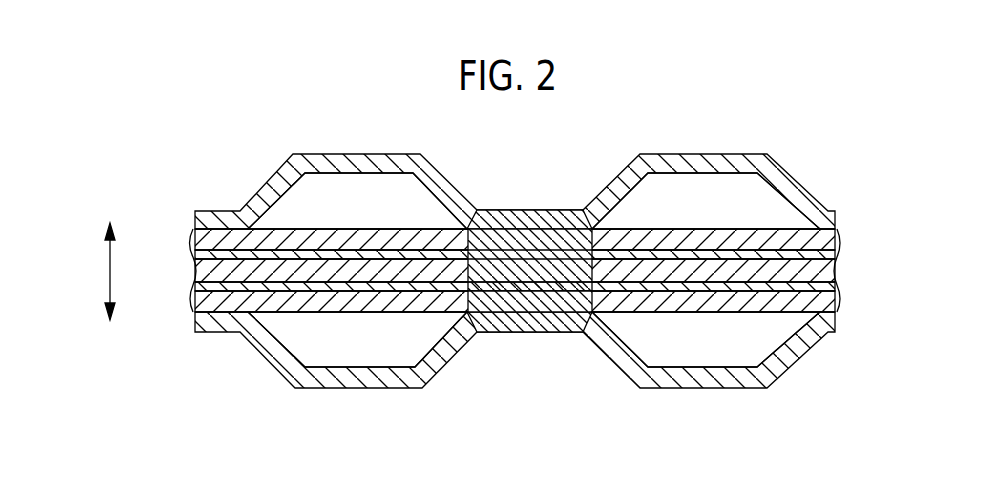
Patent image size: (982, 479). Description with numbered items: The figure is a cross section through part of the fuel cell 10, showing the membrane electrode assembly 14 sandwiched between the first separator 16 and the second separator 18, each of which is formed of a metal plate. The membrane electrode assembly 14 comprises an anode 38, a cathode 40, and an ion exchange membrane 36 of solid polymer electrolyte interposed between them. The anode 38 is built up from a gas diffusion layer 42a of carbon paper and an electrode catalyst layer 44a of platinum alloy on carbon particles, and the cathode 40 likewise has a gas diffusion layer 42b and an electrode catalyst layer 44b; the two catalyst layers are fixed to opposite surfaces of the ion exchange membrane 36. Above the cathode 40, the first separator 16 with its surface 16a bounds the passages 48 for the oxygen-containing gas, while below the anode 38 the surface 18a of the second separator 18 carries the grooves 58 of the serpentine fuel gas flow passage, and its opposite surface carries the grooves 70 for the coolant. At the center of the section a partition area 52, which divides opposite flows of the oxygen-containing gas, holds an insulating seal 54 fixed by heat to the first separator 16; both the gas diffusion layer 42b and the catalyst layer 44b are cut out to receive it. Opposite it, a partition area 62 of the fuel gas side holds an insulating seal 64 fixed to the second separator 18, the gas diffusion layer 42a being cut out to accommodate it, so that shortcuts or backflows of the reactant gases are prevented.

The fuel cell 10 is at (727, 97).
The membrane electrode assembly 14 is at (551, 268).
The first separator 16 is at (271, 177).
The bridge portion of first separator 16a is at (537, 230).
The second separator 18 is at (265, 361).
The surface of the second separator 18a is at (503, 313).
The ion exchange membrane 36 is at (838, 272).
The anode 38 is at (521, 296).
The cathode 40 is at (521, 242).
The gas diffusion layer 42a is at (195, 300).
The gas diffusion layer 42b is at (195, 236).
The electrode catalyst layer 44a is at (195, 285).
The electrode catalyst layer 44b is at (195, 255).
The oxygen-containing gas flow field 48 is at (534, 201).
The partition areas 52 is at (575, 232).
The insulating seals 54 is at (487, 243).
The grooves 58 is at (534, 339).
The partition areas 62 is at (568, 298).
The insulating seals 64 is at (535, 297).
The grooves 70 is at (470, 423).